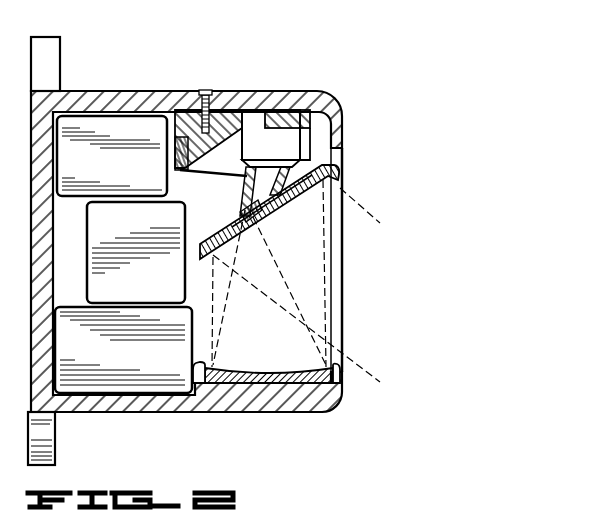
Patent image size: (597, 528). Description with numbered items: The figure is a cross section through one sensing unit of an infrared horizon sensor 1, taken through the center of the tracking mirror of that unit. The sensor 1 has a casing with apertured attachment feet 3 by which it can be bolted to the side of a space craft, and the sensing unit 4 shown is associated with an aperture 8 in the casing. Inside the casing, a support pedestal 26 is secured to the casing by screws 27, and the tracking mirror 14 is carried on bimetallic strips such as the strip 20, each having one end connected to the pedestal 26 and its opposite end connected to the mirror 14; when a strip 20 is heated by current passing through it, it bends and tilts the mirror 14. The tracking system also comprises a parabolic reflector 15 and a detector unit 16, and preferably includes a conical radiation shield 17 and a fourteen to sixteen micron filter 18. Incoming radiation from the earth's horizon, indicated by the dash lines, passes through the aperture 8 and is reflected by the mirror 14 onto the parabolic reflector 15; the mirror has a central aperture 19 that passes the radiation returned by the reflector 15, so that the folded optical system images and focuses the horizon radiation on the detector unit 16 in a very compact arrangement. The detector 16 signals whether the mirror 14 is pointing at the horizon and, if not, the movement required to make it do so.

The infrared horizon sensor 1 is at (333, 86).
The attachment feet 3 is at (60, 50).
The sensing unit 4 is at (362, 266).
The aperture 8 is at (337, 293).
The tracking mirror 14 is at (343, 180).
The parabolic reflector 15 is at (282, 369).
The detector unit 16 is at (273, 143).
The conical radiation shield 17 is at (237, 202).
The filter 18 is at (257, 219).
The central aperture 19 is at (250, 232).
The bimetallic strip 20 is at (214, 182).
The support pedestal 26 is at (183, 107).
The screws 27 is at (210, 90).